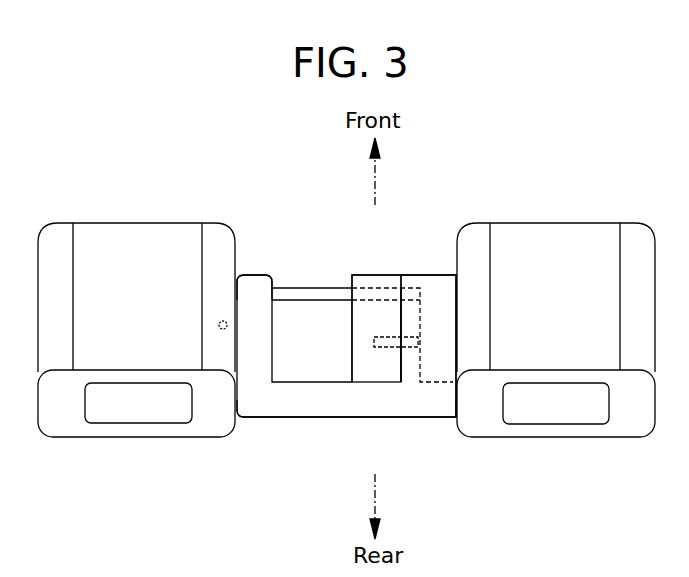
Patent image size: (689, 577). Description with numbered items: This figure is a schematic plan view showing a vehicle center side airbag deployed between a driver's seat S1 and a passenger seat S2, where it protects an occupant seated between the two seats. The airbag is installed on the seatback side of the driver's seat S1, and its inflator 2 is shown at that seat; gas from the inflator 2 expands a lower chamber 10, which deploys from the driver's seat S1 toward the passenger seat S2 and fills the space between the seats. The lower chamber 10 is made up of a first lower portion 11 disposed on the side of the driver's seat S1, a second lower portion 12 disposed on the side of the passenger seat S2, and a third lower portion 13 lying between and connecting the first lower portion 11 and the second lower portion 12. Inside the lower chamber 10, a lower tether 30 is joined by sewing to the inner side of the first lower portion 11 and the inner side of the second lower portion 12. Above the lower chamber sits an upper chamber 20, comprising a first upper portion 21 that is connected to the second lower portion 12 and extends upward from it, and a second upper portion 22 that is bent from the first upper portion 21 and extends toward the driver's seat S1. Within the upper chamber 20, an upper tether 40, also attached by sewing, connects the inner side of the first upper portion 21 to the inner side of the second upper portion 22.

The driver's seat S1 is at (143, 253).
The passenger seat S2 is at (547, 253).
The inflator 2 is at (223, 320).
The lower chamber 10 is at (298, 441).
The first lower portion 11 is at (255, 295).
The second lower portion 12 is at (433, 295).
The third lower portion 13 is at (253, 410).
The upper chamber 20 is at (430, 396).
The first upper portion 21 is at (410, 282).
The second upper portion 22 is at (372, 280).
The lower tether 30 is at (318, 297).
The upper tether 40 is at (382, 348).